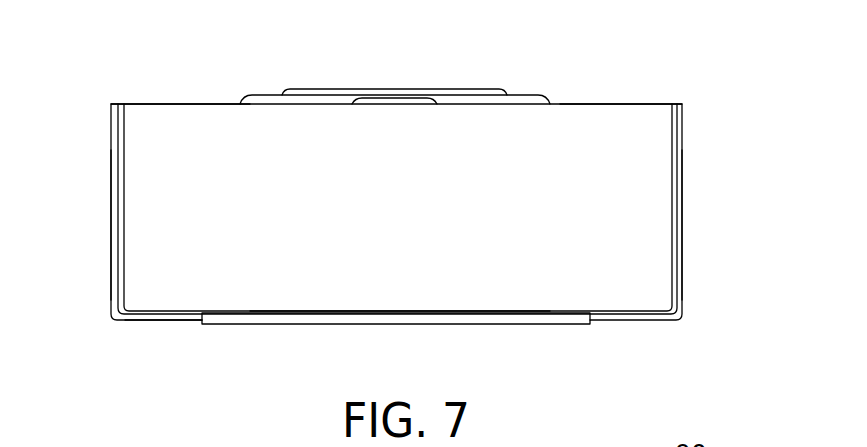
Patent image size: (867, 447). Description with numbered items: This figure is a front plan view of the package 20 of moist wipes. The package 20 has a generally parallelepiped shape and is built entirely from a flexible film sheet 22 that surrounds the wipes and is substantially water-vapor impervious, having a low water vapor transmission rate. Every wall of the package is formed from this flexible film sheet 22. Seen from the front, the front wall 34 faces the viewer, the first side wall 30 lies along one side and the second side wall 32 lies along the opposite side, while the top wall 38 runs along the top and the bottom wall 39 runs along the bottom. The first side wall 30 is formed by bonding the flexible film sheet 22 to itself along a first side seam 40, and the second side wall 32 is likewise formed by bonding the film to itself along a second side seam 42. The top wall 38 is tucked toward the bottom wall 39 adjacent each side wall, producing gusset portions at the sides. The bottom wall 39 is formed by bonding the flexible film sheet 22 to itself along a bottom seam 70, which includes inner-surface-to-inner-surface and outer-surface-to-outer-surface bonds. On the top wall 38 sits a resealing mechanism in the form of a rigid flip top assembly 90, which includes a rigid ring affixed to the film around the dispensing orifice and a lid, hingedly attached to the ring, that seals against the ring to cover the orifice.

The package 20 is at (521, 57).
The flexible film sheet 22 is at (185, 125).
The first side wall 30 is at (119, 193).
The second side wall 32 is at (672, 247).
The front wall 34 is at (382, 273).
The top wall 38 is at (607, 104).
The bottom wall 39 is at (187, 320).
The first side seam 40 is at (112, 238).
The second side seam 42 is at (683, 195).
The bottom seam 70 is at (535, 324).
The rigid flip top assembly 90 is at (308, 88).